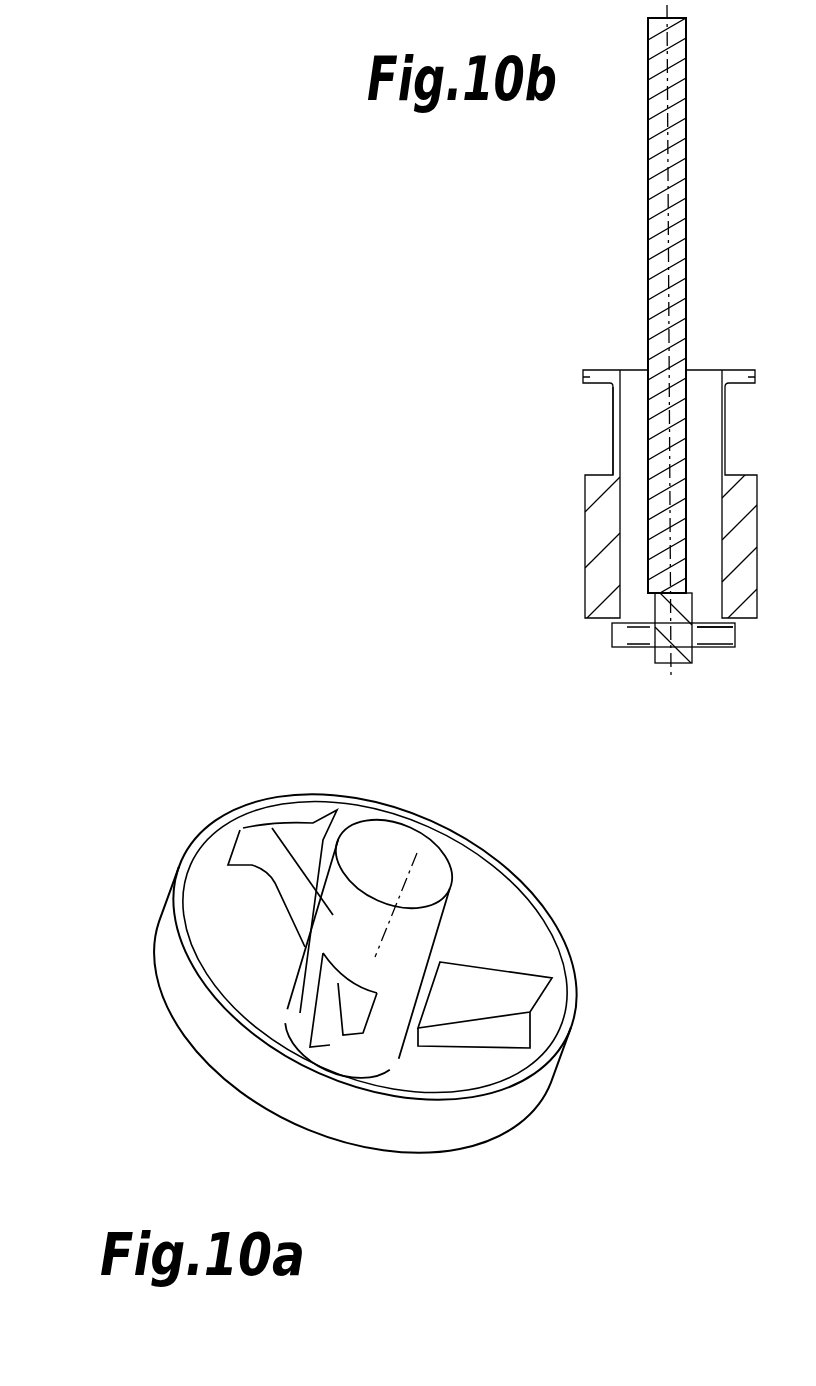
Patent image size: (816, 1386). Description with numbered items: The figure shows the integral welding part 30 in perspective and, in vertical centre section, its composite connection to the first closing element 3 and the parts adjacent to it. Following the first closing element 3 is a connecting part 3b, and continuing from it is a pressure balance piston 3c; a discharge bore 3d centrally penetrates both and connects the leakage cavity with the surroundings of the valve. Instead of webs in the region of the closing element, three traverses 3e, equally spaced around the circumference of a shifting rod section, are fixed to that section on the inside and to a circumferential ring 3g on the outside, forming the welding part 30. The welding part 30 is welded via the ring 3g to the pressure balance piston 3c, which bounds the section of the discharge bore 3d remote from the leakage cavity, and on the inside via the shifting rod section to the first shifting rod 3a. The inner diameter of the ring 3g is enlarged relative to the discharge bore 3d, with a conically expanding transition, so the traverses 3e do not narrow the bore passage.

In FIG. 10B, the first closing element 3 is at (593, 380).
In FIG. 10B, the first shifting rod 3a is at (665, 200).
In FIG. 10B, the connecting part 3b is at (613, 420).
In FIG. 10B, the pressure balance piston 3c is at (603, 502).
In FIG. 10B, the discharge bore 3d is at (635, 448).
In FIG. 10B, the traverses 3e is at (720, 635).
In FIG. 10A, the traverses 3e is at (390, 929).
In FIG. 10B, the circumferential ring 3g is at (613, 643).
In FIG. 10A, the circumferential ring 3g is at (480, 1120).
In FIG. 10B, the integral welding part 30 is at (647, 675).
In FIG. 10A, the integral welding part 30 is at (233, 797).